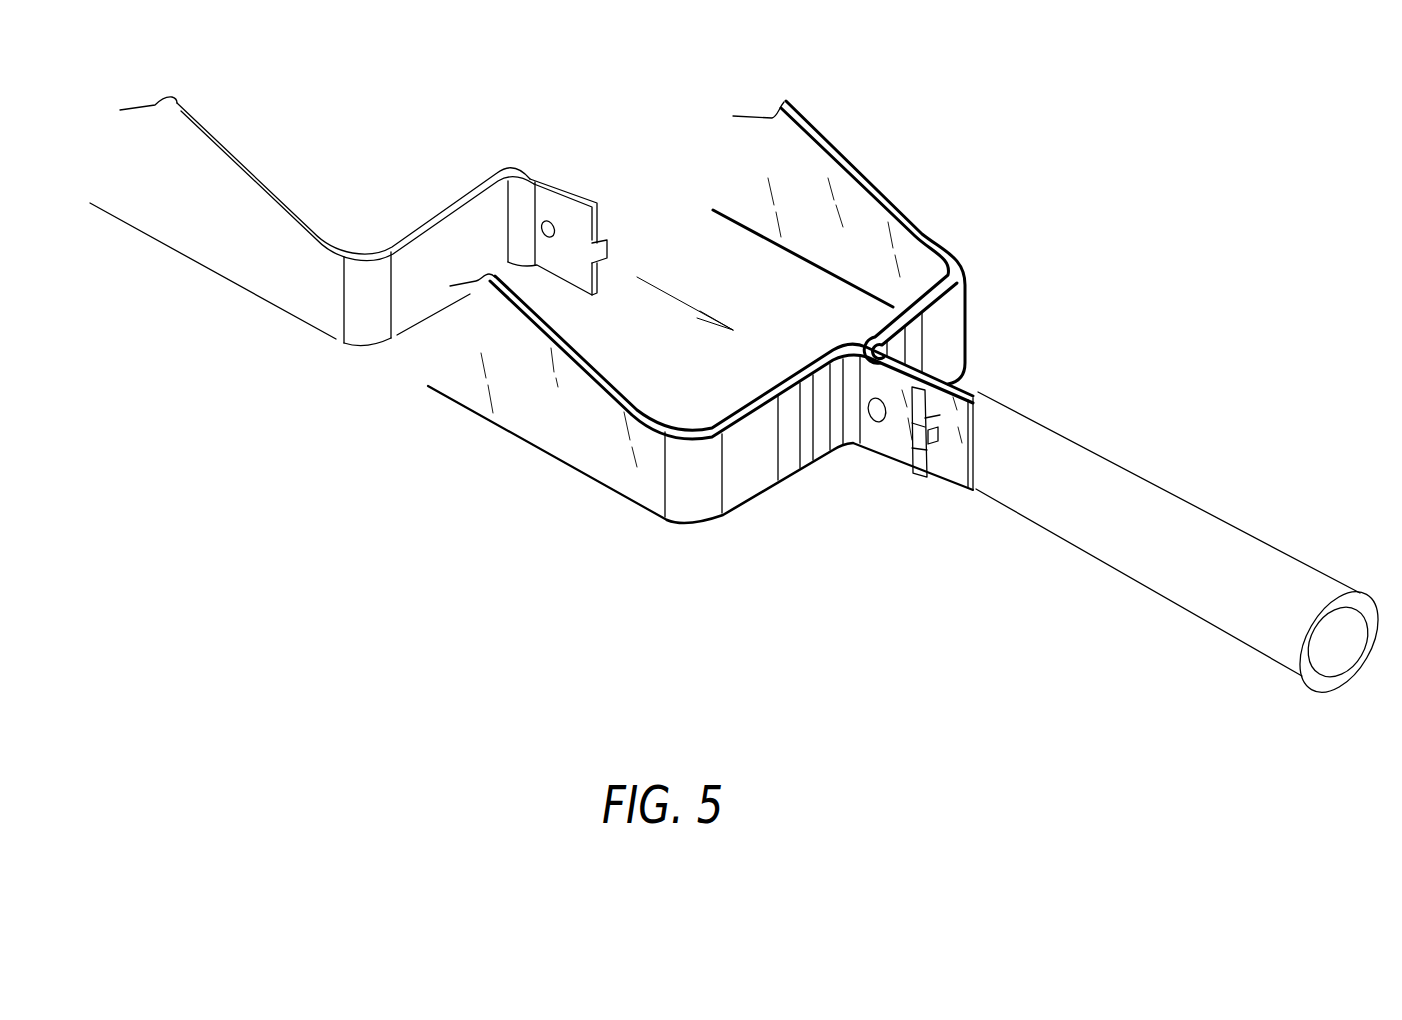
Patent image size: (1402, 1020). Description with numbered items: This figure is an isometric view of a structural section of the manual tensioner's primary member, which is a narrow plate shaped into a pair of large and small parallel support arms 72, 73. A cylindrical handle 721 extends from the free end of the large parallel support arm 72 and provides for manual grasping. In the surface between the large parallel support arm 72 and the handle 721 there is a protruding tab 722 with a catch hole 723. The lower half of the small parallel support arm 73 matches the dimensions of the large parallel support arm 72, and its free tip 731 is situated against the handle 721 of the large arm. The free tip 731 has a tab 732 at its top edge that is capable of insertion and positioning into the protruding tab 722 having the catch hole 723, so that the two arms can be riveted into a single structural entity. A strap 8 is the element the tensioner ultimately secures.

The large parallel support arm 72 is at (857, 170).
The cylindrical handle 721 is at (1113, 577).
The protruding tab 722 is at (913, 450).
The catch hole 723 is at (932, 476).
The small parallel support arm 73 is at (207, 268).
The free tip 731 is at (598, 223).
The tab 732 is at (605, 255).
The strap 8 is at (877, 423).